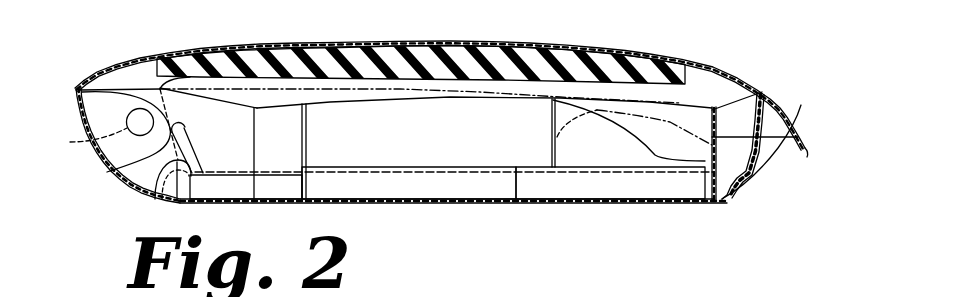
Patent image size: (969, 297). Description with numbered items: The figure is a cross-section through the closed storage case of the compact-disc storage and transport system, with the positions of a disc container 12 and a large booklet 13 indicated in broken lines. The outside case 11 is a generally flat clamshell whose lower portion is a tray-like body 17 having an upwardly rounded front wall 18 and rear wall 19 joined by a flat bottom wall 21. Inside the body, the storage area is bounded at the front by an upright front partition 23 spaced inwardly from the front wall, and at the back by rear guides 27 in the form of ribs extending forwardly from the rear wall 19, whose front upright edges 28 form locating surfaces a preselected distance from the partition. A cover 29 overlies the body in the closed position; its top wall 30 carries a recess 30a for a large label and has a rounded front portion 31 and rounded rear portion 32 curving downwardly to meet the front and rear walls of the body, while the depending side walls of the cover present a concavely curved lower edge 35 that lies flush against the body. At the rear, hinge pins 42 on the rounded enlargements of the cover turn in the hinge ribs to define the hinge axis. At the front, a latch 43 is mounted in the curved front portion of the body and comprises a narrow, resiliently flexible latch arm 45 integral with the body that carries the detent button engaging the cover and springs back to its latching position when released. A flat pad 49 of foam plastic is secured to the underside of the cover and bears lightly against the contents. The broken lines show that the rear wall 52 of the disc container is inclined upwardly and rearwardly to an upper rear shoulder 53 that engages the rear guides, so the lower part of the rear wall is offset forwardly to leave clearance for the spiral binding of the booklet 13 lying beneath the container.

The outside case 11 is at (99, 192).
The disc container 12 is at (685, 107).
The large booklet 13 is at (426, 205).
The tray-like body 17 is at (717, 205).
The front wall 18 is at (757, 184).
The rear wall 19 is at (124, 187).
The bottom wall 21 is at (545, 203).
The front partition 23 is at (763, 113).
The rear guides 27 is at (103, 118).
The front upright edges 28 is at (107, 172).
The cover 29 is at (528, 40).
The top wall 30 is at (258, 44).
The recess 30a is at (710, 64).
The rounded front portion 31 is at (753, 87).
The rounded rear portion 32 is at (104, 67).
The lower edge 35 is at (553, 137).
The hinge pins 42 is at (72, 142).
The latch 43 is at (795, 112).
The latch arm 45 is at (753, 160).
The flat pad 49 is at (398, 56).
The rear wall 52 is at (153, 193).
The upper rear shoulder 53 is at (160, 88).